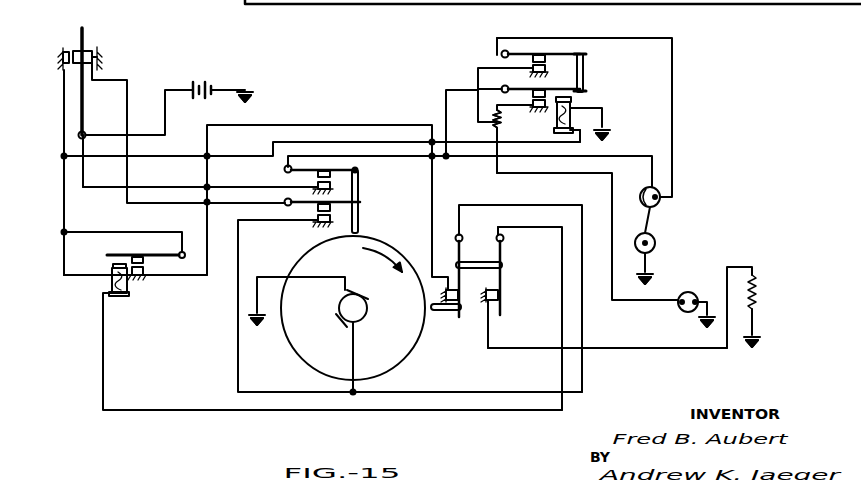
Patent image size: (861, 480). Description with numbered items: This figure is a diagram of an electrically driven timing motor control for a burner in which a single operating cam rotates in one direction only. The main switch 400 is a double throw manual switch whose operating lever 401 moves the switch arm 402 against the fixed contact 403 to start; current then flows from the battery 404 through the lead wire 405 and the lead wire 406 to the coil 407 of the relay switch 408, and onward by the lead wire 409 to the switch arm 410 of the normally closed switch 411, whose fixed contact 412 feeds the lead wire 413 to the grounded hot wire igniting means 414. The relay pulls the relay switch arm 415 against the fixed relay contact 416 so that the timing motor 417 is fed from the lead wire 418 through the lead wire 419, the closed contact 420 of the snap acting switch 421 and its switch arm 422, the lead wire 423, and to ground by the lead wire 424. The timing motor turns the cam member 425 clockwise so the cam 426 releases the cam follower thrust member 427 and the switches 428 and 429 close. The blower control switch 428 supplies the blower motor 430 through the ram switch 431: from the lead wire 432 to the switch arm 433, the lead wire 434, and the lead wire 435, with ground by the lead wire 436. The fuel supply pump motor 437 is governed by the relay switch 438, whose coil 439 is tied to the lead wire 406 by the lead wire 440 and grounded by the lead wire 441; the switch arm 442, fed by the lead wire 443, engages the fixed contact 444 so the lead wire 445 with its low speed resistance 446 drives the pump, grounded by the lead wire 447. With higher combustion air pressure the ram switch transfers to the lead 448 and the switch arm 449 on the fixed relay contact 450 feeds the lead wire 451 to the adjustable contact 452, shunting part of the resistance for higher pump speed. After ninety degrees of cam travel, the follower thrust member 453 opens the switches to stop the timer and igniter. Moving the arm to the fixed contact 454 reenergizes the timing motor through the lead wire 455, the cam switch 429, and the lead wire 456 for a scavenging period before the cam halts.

The main switch 400 is at (97, 45).
The operating extension or lever 401 is at (84, 28).
The switch arm 402 is at (84, 100).
The fixed switch contact 403 is at (63, 48).
The battery 404 is at (212, 82).
The lead wire 405 is at (170, 88).
The lead wire 406 is at (64, 105).
The coil 407 is at (126, 292).
The timing motor controlling relay switch 408 is at (102, 283).
The lead wire 409 is at (197, 411).
The switch arm 410 is at (502, 310).
The cam operated switch 411 is at (508, 288).
The fixed contact 412 is at (500, 278).
The lead wire 413 is at (632, 351).
The hot wire igniting means 414 is at (758, 304).
The relay switch arm 415 is at (126, 255).
The fixed relay contact 416 is at (140, 278).
The timing motor 417 is at (368, 304).
The lead wire 418 is at (112, 232).
The lead wire 419 is at (309, 125).
The closed contact 420 is at (444, 312).
The cam operated snap acting switch 421 is at (463, 297).
The switch arm 422 is at (462, 250).
The lead wire 423 is at (361, 356).
The lead wire 424 is at (277, 277).
The cam member 425 is at (302, 349).
The cam 426 is at (361, 233).
The cam follower thrust member 427 is at (359, 216).
The blower control switch 428 is at (340, 180).
The cam switch 429 is at (340, 222).
The blower motor 430 is at (658, 243).
The ram switch 431 is at (663, 206).
The lead wire 432 is at (145, 187).
The cam operated switch arm 433 is at (284, 170).
The lead wire 434 is at (476, 158).
The lead wire 435 is at (647, 228).
The lead wire 436 is at (648, 266).
The fuel supply pump motor 437 is at (682, 308).
The relay switch 438 is at (590, 104).
The relay switch coil 439 is at (554, 119).
The lead wire 440 is at (385, 140).
The lead wire 441 is at (603, 123).
The low speed fuel pump switch arm 442 is at (582, 86).
The lead wire 443 is at (446, 91).
The fixed contact 444 is at (522, 131).
The lead wire 445 is at (558, 175).
The low speed resistance 446 is at (493, 114).
The lead wire 447 is at (704, 315).
The lead 448 is at (673, 149).
The switch arm 449 is at (588, 53).
The fixed relay contact 450 is at (503, 54).
The lead wire 451 is at (478, 69).
The adjustable contact 452 is at (494, 126).
The follower thrust member 453 is at (457, 318).
The fixed contact 454 is at (100, 58).
The lead wire 455 is at (128, 121).
The lead wire 456 is at (237, 323).